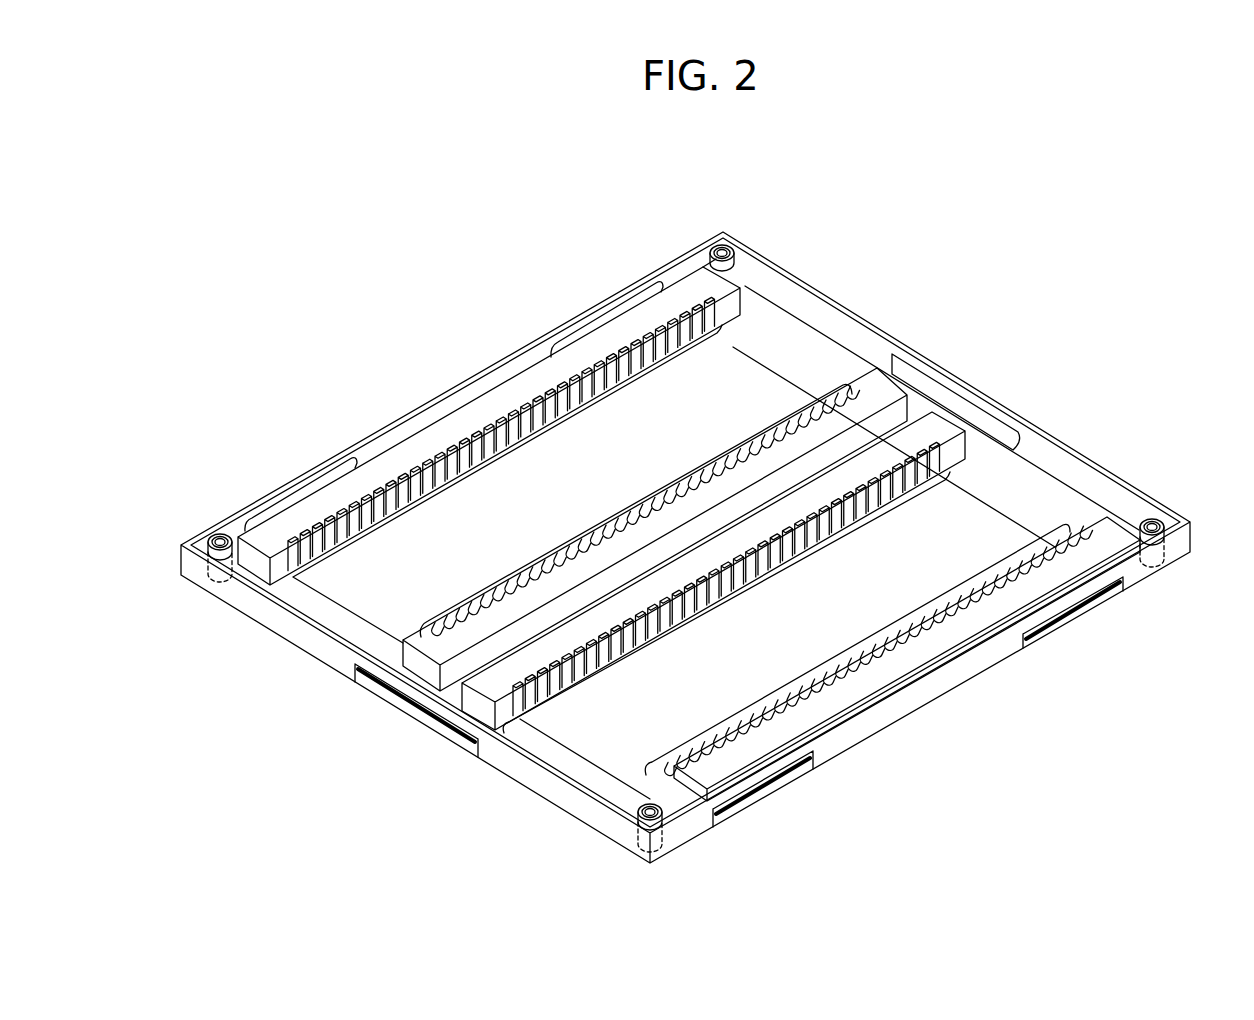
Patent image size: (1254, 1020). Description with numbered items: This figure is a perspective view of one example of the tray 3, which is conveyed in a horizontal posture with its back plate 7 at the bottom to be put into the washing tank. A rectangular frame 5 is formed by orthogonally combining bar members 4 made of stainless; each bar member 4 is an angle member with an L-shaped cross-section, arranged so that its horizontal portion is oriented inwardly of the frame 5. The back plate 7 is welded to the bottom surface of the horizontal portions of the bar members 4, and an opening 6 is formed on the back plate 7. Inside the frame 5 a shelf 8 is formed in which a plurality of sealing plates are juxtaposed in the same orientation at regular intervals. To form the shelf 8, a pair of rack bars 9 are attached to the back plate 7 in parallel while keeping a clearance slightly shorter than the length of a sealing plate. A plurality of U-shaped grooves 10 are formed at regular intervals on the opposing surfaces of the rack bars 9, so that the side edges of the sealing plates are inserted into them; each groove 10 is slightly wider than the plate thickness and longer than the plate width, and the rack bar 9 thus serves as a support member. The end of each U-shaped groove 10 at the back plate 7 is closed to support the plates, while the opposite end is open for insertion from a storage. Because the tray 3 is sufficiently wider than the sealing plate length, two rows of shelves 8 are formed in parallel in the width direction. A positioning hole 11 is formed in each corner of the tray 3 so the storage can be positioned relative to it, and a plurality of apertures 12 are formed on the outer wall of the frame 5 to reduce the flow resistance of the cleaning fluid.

The tray 3 is at (390, 267).
The bar member 4 is at (462, 385).
The frame 5 is at (1140, 474).
The opening 6 is at (735, 346).
The back plate 7 is at (1015, 474).
The shelf 8 is at (366, 644).
The rack bar 9 is at (262, 582).
The U-shaped groove 10 is at (520, 447).
The positioning hole 11 is at (722, 241).
The aperture 12 is at (606, 318).